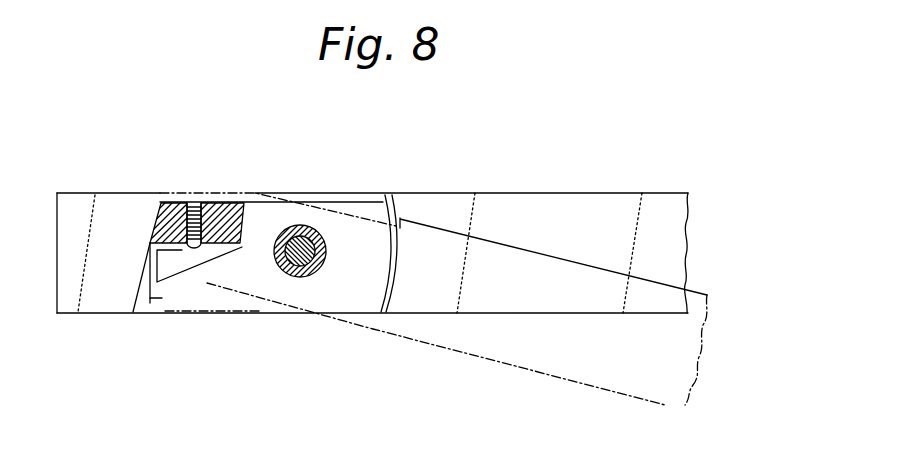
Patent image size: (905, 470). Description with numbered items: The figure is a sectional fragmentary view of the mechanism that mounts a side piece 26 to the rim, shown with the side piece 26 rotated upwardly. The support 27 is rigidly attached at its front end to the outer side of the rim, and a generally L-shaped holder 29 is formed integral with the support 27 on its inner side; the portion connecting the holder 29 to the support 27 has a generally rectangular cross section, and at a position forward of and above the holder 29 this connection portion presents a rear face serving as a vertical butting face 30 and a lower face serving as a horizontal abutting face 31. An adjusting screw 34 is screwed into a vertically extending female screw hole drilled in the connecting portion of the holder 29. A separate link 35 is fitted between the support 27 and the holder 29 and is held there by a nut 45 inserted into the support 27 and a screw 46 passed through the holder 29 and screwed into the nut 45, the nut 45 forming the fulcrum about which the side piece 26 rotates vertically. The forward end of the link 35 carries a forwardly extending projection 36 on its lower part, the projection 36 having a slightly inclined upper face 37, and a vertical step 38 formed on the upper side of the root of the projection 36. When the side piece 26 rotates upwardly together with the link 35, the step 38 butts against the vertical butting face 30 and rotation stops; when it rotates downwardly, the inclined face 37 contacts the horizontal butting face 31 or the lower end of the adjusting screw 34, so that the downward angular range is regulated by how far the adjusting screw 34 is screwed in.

The side piece 26 is at (448, 193).
The support 27 is at (110, 193).
The holder 29 is at (161, 202).
The vertical butting face 30 is at (244, 203).
The horizontal abutting face 31 is at (185, 249).
The adjusting screw 34 is at (218, 252).
The link 35 is at (370, 202).
The projection 36 is at (152, 298).
The inclined upper face 37 is at (225, 251).
The vertical step 38 is at (240, 222).
The nut 45 is at (298, 227).
The screw 46 is at (314, 241).